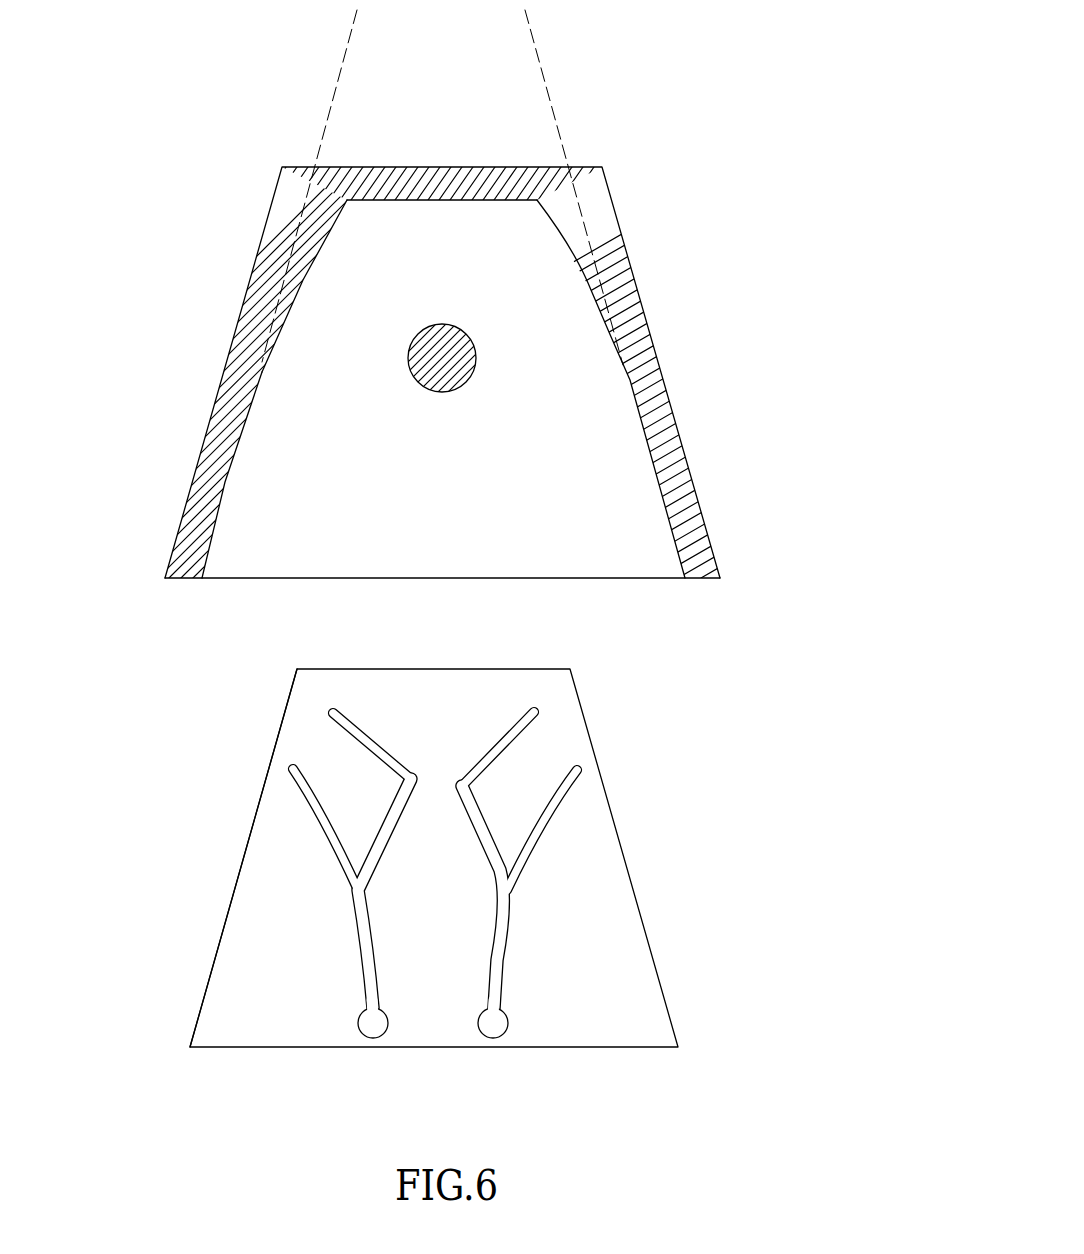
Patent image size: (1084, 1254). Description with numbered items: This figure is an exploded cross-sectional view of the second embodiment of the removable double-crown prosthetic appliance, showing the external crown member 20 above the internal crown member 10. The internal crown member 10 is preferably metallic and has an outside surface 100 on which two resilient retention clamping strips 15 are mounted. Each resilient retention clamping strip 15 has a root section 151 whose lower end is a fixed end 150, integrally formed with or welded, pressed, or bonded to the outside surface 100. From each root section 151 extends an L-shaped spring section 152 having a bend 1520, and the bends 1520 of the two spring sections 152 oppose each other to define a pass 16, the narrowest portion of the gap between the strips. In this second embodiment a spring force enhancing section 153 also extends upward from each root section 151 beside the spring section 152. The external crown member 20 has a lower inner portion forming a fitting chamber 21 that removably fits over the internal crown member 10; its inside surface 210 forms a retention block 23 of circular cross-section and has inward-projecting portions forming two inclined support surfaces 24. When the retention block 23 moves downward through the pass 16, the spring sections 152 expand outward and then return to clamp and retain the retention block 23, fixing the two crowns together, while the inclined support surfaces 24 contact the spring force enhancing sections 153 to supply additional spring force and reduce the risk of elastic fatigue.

The internal crown member 10 is at (198, 830).
The outside surface 100 is at (253, 980).
The resilient retention clamping strip 15 is at (481, 865).
The fixed end 150 is at (373, 1020).
The root section 151 is at (363, 945).
The spring section 152 is at (369, 750).
The bend 1520 is at (433, 783).
The spring force enhancing section 153 is at (297, 792).
The pass 16 is at (433, 781).
The external crown member 20 is at (642, 175).
The fitting chamber 21 is at (537, 515).
The inside surface 210 is at (225, 482).
The retention block 23 is at (413, 367).
The inclined support surface 24 is at (302, 300).